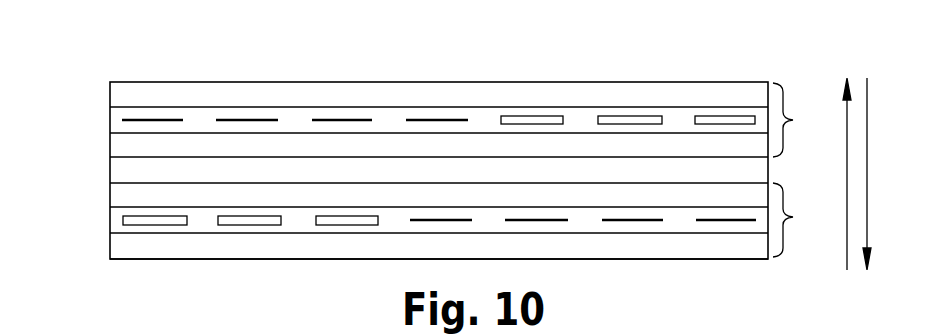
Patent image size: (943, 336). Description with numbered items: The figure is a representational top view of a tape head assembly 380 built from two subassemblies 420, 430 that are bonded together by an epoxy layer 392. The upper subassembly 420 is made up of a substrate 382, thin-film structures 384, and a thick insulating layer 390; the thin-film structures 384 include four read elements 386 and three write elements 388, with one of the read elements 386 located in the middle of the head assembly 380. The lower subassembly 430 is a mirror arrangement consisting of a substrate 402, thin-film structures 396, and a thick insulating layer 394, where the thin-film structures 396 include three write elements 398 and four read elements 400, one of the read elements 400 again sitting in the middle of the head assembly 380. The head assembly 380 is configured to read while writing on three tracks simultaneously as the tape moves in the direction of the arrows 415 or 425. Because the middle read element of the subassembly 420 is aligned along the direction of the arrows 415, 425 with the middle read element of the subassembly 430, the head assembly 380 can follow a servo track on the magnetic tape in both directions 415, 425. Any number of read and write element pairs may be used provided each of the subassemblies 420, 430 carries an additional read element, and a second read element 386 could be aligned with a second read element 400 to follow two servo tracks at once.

The head assembly 380 is at (428, 46).
The substrate 382 is at (125, 93).
The thin-film structures 384 is at (115, 113).
The read elements 386 is at (227, 118).
The write elements 388 is at (695, 117).
The thick insulating layer 390 is at (125, 147).
The epoxy layer 392 is at (117, 170).
The thick insulating layer 394 is at (127, 197).
The thin-film structures 396 is at (115, 217).
The write elements 398 is at (233, 223).
The read elements 400 is at (707, 222).
The substrate 402 is at (117, 248).
The arrow 415 is at (847, 250).
The subassembly 420 is at (806, 120).
The arrow 425 is at (867, 97).
The subassembly 430 is at (806, 220).